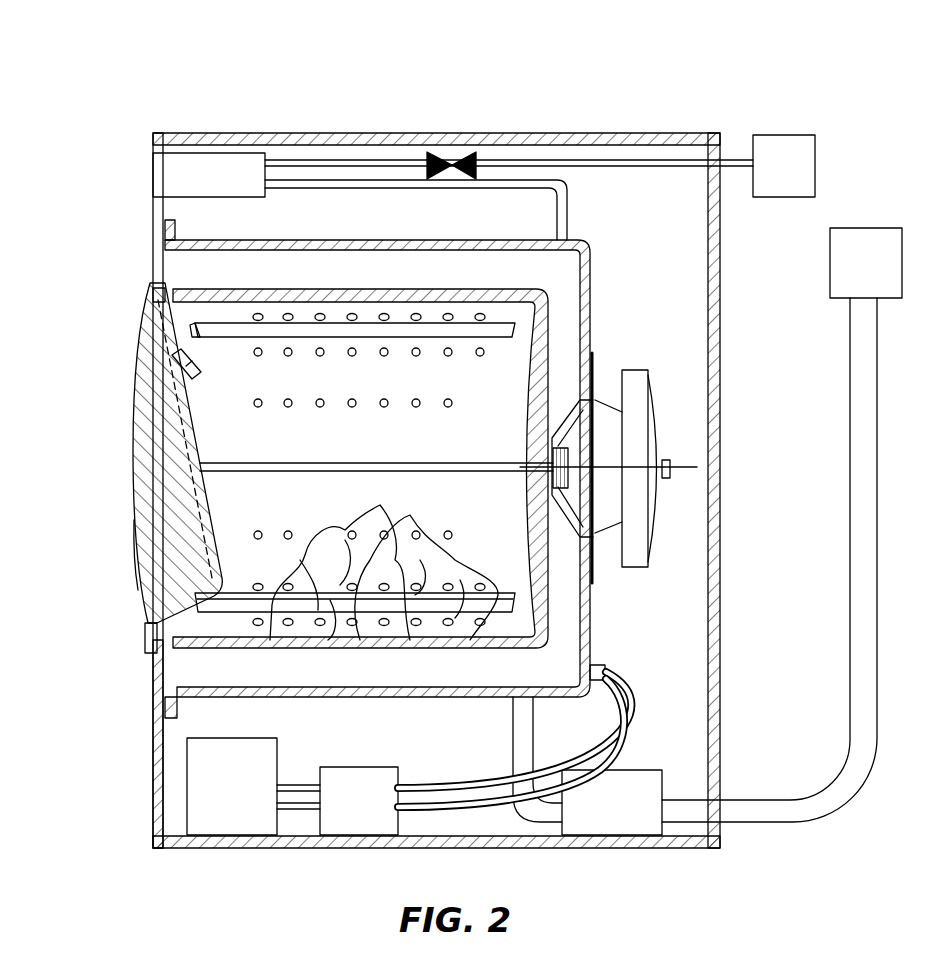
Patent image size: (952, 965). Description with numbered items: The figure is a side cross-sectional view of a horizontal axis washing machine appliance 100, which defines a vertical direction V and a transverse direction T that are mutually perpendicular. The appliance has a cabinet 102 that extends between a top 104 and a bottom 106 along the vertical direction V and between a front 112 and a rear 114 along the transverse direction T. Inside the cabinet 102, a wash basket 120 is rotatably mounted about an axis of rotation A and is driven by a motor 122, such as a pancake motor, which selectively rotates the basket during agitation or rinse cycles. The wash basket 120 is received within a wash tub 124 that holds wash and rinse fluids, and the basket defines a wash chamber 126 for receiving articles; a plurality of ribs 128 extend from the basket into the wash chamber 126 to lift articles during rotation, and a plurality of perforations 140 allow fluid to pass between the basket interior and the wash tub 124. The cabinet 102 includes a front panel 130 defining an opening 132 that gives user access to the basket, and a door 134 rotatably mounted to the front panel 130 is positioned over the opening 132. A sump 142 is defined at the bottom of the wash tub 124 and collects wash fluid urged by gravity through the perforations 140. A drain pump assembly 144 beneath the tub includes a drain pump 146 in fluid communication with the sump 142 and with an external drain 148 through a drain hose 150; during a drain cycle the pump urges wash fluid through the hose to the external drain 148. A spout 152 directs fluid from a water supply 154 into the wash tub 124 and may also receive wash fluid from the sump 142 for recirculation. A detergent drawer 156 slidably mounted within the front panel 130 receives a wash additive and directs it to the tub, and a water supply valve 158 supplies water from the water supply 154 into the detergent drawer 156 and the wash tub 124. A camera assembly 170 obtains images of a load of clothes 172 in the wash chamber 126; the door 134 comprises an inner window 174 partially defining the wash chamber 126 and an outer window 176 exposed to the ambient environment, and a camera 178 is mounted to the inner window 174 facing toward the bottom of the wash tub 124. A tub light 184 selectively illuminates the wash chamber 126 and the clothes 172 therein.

The washing machine appliance 100 is at (182, 64).
The cabinet 102 is at (724, 474).
The top 104 is at (736, 130).
The bottom 106 is at (748, 838).
The front 112 is at (142, 133).
The rear 114 is at (724, 297).
The wash basket 120 is at (365, 292).
The motor 122 is at (637, 408).
The wash tub 124 is at (592, 305).
The wash chamber 126 is at (218, 418).
The ribs 128 is at (306, 463).
The front panel 130 is at (150, 668).
The opening 132 is at (176, 320).
The door 134 is at (140, 523).
The perforations 140 is at (418, 405).
The sump 142 is at (553, 655).
The drain pump assembly 144 is at (684, 720).
The drain pump 146 is at (630, 813).
The external drain 148 is at (850, 274).
The drain hose 150 is at (848, 602).
The spout 152 is at (566, 213).
The water supply 154 is at (768, 177).
The detergent drawer 156 is at (222, 170).
The water supply valve 158 is at (454, 160).
The camera assembly 170 is at (168, 362).
The load of clothes 172 is at (381, 600).
The inner window 174 is at (220, 520).
The outer window 176 is at (137, 558).
The camera 178 is at (200, 350).
The tub light 184 is at (160, 290).
The axis of rotation A is at (696, 466).
The vertical direction V is at (31, 352).
The transverse direction T is at (270, 38).